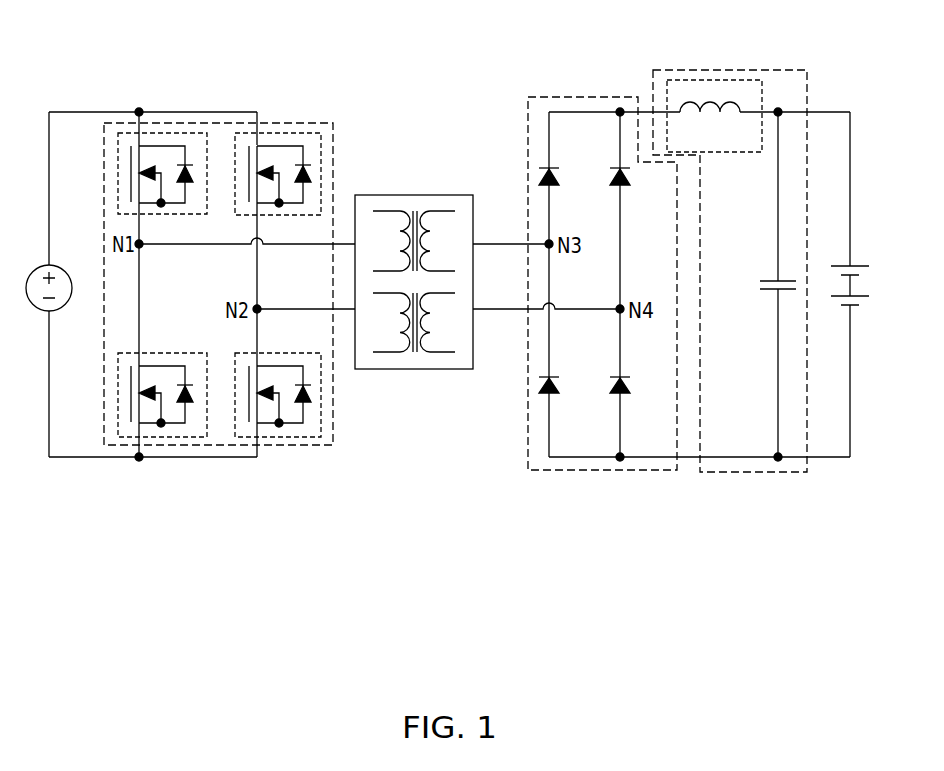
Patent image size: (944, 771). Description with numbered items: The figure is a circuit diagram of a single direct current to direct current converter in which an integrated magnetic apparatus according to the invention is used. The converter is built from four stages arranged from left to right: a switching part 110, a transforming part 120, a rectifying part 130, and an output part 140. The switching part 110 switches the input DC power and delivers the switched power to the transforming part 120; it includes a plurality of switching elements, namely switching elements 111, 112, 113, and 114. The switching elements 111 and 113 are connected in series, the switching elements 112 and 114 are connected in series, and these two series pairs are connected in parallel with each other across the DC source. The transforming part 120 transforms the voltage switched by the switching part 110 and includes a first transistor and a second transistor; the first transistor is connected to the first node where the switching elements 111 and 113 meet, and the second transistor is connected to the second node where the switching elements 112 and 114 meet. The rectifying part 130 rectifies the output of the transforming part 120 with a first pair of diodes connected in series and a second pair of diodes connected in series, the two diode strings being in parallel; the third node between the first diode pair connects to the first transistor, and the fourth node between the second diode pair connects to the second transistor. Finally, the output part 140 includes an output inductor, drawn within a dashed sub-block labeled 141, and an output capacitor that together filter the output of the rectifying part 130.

The switching part 110 is at (113, 123).
The switching element 111 is at (196, 133).
The switching element 112 is at (310, 133).
The switching element 113 is at (198, 438).
The switching element 114 is at (307, 438).
The transforming part 120 is at (446, 195).
The rectifying part 130 is at (598, 97).
The output part 140 is at (761, 243).
The output inductor 141 is at (743, 80).